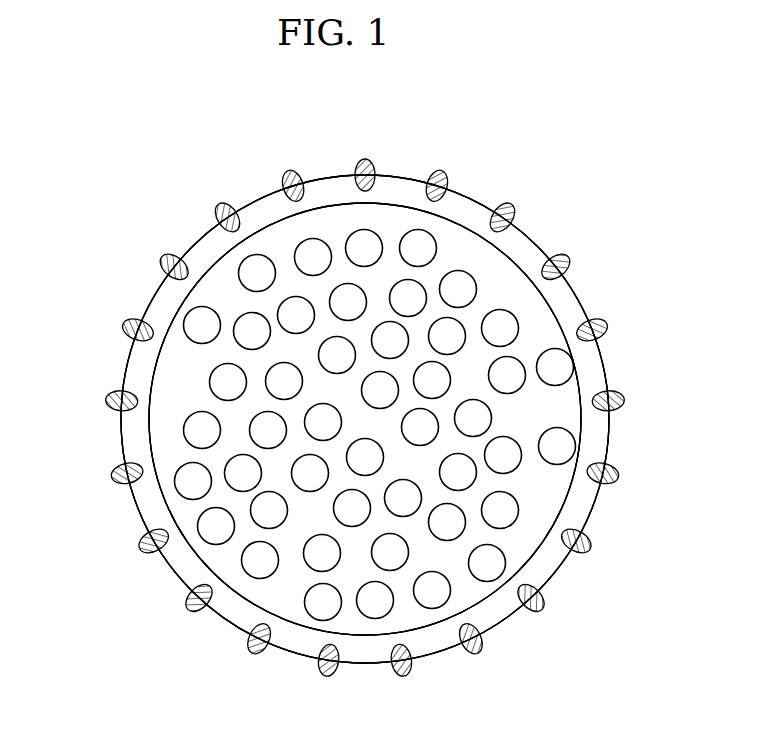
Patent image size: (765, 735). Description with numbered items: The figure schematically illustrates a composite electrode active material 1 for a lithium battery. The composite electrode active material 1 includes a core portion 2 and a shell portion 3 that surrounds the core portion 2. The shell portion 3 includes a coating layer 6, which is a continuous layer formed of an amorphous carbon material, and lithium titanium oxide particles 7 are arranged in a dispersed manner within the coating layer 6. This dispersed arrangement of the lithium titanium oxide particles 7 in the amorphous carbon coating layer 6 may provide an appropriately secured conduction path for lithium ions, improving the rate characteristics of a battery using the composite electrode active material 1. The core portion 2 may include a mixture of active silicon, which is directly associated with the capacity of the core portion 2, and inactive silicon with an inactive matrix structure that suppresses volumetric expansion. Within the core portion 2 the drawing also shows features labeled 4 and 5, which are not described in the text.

The composite electrode active material 1 is at (130, 208).
The core portion 2 is at (583, 431).
The shell portion 3 is at (517, 250).
The strands 4 is at (362, 233).
The filler 5 is at (278, 242).
The coating layer 6 is at (575, 292).
The lithium titanium oxide particles 7 is at (598, 325).